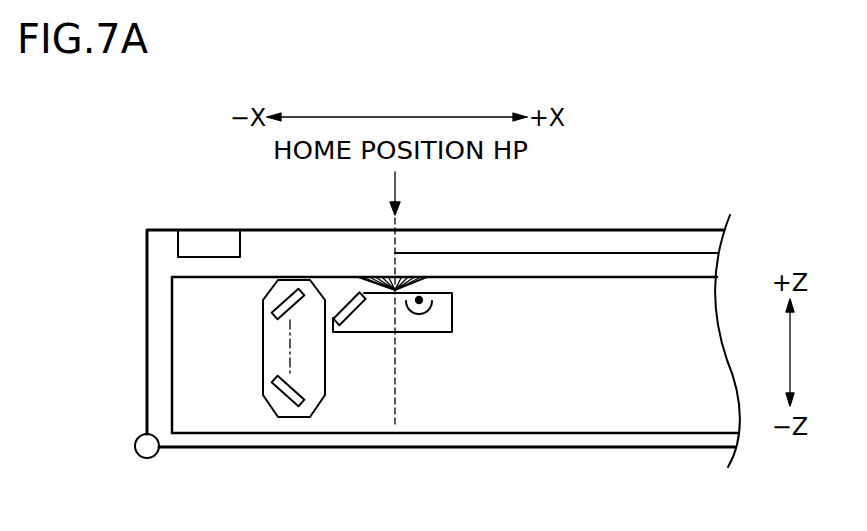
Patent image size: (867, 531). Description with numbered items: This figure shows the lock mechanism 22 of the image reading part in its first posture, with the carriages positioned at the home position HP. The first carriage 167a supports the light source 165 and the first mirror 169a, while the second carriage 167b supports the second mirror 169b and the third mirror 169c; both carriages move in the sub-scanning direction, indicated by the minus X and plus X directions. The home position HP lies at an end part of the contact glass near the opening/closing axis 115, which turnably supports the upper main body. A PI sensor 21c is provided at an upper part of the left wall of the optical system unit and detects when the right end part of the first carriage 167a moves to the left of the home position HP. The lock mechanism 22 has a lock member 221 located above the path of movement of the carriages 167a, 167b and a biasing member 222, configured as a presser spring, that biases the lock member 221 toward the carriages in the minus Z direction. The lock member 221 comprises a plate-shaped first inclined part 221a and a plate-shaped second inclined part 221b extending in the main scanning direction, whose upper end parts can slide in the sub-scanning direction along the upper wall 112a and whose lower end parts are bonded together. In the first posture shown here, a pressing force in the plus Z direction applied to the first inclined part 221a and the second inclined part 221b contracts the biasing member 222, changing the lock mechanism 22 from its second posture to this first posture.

The PI sensor 21c is at (188, 237).
The lock mechanism 22 is at (363, 257).
The upper wall 112a is at (522, 277).
The opening/closing axis 115 is at (135, 443).
The light source 165 is at (418, 317).
The first carriage 167a is at (452, 295).
The second carriage 167b is at (263, 318).
The first mirror 169a is at (362, 300).
The second mirror 169b is at (283, 300).
The third mirror 169c is at (277, 407).
The lock member 221 is at (420, 276).
The first inclined part 221a is at (417, 282).
The second inclined part 221b is at (383, 285).
The biasing member 222 is at (385, 280).